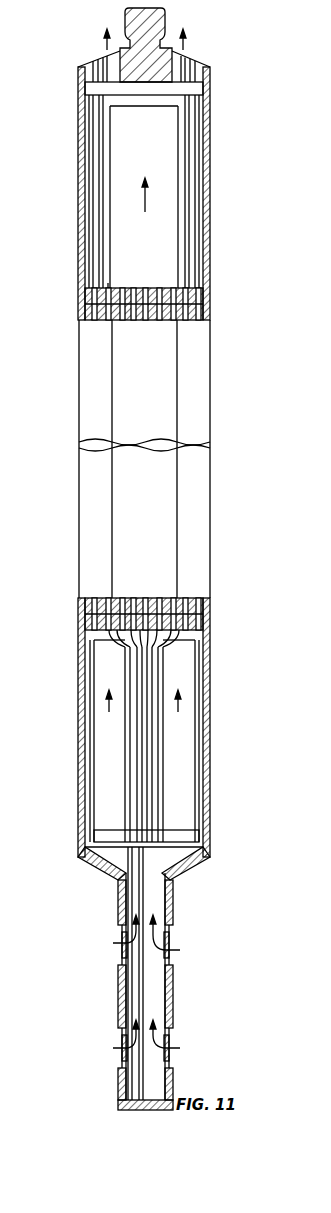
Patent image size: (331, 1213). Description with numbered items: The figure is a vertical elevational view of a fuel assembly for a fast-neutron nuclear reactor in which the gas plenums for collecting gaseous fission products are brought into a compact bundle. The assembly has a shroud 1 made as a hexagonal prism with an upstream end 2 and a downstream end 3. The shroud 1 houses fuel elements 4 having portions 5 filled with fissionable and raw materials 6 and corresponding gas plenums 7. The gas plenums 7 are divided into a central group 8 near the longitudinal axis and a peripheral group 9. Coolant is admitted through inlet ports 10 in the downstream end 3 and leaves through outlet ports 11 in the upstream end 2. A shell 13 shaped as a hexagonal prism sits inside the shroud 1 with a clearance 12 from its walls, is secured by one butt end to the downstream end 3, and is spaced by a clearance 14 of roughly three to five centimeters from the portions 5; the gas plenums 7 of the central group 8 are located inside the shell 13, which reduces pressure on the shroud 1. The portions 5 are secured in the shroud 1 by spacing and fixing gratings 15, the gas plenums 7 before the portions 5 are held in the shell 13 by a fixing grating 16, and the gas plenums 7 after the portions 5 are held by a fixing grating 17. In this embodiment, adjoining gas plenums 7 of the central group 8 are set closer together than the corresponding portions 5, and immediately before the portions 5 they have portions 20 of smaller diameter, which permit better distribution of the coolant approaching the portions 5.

The shroud 1 is at (80, 197).
The upstream end 2 is at (128, 21).
The downstream end 3 is at (118, 1002).
The fuel elements 4 is at (83, 608).
The portions filled with fissionable and raw materials 5 is at (75, 283).
The fissionable and raw materials 6 is at (96, 322).
The gas plenums 7 is at (93, 147).
The central group 8 is at (115, 752).
The peripheral group 9 is at (83, 240).
The inlet ports 10 is at (170, 950).
The outlet ports 11 is at (106, 53).
The clearance 12 is at (86, 722).
The shell 13 is at (92, 692).
The clearance 14 is at (184, 640).
The spacing and fixing gratings 15 is at (108, 288).
The fixing grating 16 is at (95, 831).
The fixing grating 17 is at (100, 111).
The portions of reduced diameter 20 is at (120, 643).